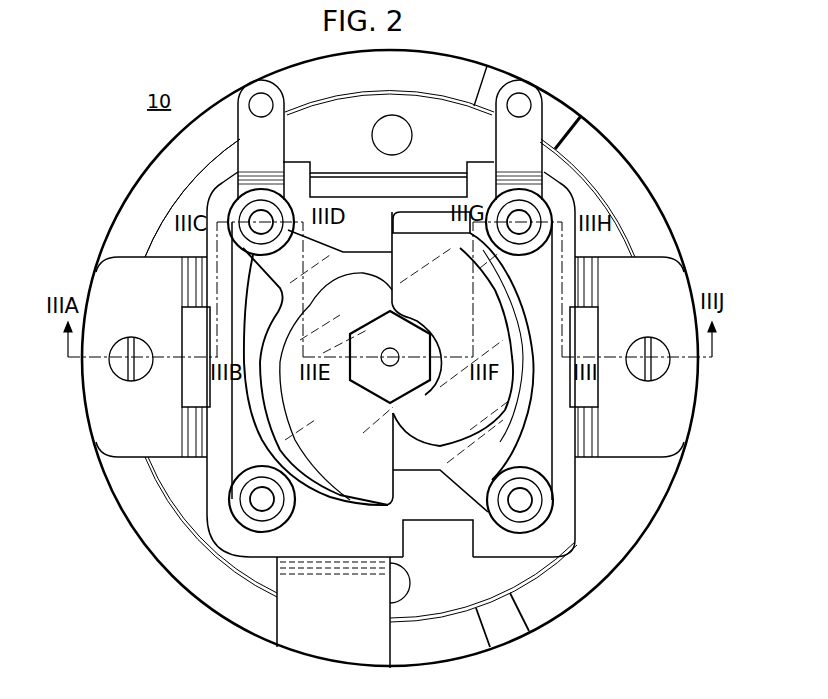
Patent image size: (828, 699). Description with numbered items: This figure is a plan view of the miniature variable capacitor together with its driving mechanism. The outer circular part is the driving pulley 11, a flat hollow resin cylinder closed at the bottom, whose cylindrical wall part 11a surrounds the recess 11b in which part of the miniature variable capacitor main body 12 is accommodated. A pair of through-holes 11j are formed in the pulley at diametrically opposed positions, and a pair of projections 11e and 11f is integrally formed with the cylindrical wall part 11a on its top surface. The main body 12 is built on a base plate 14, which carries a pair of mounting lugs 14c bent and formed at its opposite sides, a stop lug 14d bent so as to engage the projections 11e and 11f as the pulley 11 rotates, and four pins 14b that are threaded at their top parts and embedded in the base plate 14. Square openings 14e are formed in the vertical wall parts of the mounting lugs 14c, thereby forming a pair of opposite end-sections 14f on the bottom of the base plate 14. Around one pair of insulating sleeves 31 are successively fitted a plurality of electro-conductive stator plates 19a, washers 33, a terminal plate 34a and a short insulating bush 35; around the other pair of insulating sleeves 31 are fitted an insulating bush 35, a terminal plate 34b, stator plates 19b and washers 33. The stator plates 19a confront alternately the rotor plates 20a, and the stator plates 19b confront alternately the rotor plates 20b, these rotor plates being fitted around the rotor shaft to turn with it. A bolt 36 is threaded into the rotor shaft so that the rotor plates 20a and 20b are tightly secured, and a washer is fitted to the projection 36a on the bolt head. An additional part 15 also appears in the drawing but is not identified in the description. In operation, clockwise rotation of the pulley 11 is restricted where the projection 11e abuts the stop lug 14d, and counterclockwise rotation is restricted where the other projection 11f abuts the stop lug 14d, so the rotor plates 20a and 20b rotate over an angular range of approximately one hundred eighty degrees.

The driving pulley 11 is at (600, 592).
The cylindrical wall part 11a is at (553, 610).
The recess 11b is at (527, 640).
The projection 11e is at (452, 653).
The projection 11f is at (493, 78).
The through-hole 11j is at (390, 115).
The miniature variable capacitor main body 12 is at (580, 496).
The base plate 14 is at (202, 502).
The pin 14b is at (258, 505).
The mounting lug 14c is at (98, 427).
The stop lug 14d is at (330, 657).
The square opening 14e is at (183, 313).
The opposite end-section 14f is at (212, 385).
The stop block 15 is at (472, 507).
The stator plate 19a is at (419, 208).
The stator plate 19b is at (365, 257).
The rotor plate 20a is at (432, 440).
The rotor plate 20b is at (357, 490).
The insulating sleeve 31 is at (265, 200).
The washer 33 is at (230, 459).
The terminal plate 34a is at (544, 112).
The terminal plate 34b is at (242, 106).
The insulating bush 35 is at (237, 205).
The bolt 36 is at (418, 330).
The projection 36a is at (385, 364).